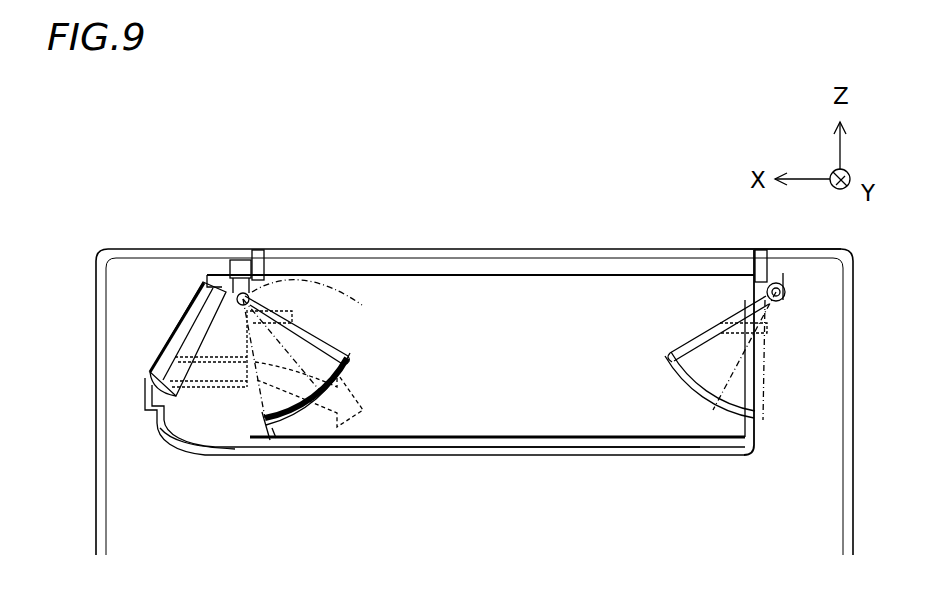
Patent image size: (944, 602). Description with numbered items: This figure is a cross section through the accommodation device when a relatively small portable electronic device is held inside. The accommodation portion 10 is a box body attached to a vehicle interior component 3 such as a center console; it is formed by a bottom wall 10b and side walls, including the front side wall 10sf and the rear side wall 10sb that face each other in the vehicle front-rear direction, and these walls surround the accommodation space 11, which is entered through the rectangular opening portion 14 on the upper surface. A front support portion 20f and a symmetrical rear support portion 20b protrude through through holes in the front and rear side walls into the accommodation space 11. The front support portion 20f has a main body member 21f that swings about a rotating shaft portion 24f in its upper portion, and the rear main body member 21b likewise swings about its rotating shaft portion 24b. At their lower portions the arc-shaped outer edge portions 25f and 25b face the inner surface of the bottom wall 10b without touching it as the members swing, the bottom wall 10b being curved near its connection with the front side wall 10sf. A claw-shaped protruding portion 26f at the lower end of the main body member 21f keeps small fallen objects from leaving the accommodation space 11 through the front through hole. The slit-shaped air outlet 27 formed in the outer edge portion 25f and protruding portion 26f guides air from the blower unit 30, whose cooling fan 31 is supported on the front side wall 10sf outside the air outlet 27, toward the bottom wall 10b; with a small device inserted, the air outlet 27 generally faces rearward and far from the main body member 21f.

The vehicle interior component 3 is at (847, 500).
The accommodation portion 10 is at (410, 460).
The bottom wall 10b is at (567, 457).
The front side wall 10sf is at (266, 300).
The rear side wall 10sb is at (757, 288).
The accommodation space 11 is at (462, 422).
The opening portion 14 is at (740, 248).
The front support portion 20f is at (332, 290).
The rear support portion 20b is at (708, 333).
The main body member 21f is at (340, 345).
The main body member 21b is at (680, 353).
The rotating shaft portion 24f is at (234, 265).
The rotating shaft portion 24b is at (762, 278).
The outer edge portion 25f is at (297, 405).
The outer edge portion 25b is at (700, 400).
The protruding portion 26f is at (268, 430).
The air outlet 27 is at (247, 420).
The blower unit 30 is at (162, 345).
The cooling fan 31 is at (162, 340).